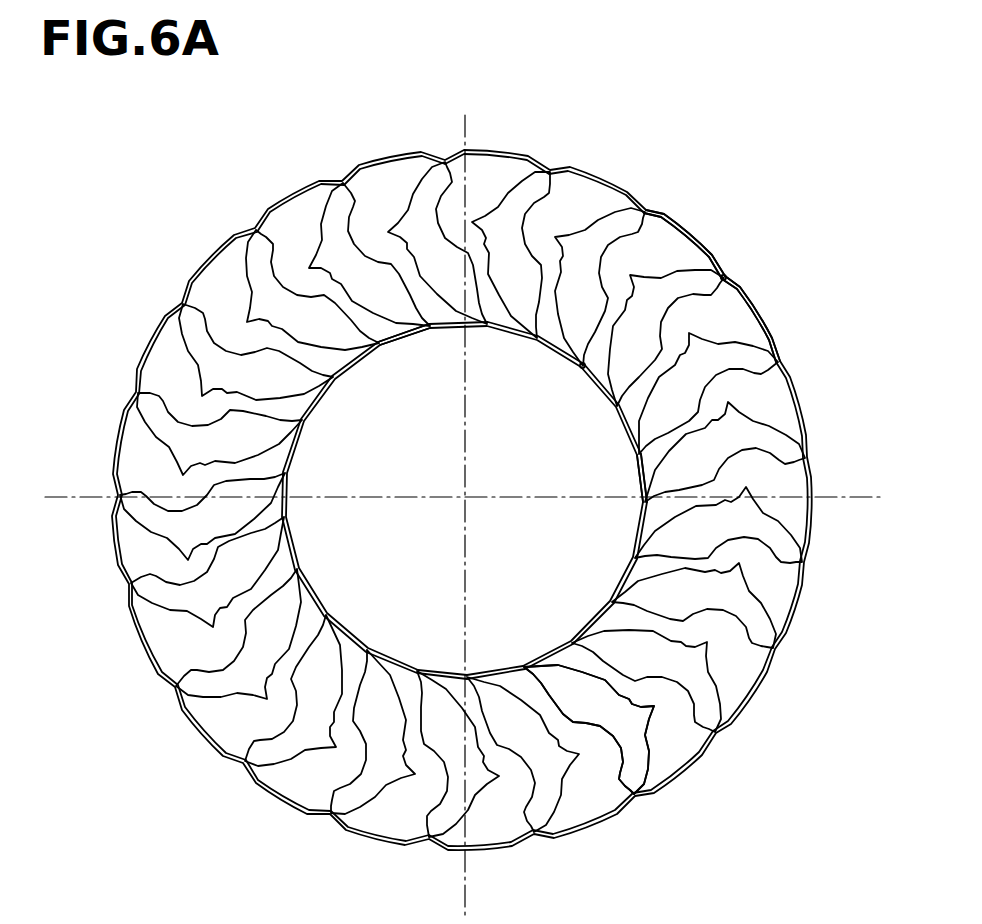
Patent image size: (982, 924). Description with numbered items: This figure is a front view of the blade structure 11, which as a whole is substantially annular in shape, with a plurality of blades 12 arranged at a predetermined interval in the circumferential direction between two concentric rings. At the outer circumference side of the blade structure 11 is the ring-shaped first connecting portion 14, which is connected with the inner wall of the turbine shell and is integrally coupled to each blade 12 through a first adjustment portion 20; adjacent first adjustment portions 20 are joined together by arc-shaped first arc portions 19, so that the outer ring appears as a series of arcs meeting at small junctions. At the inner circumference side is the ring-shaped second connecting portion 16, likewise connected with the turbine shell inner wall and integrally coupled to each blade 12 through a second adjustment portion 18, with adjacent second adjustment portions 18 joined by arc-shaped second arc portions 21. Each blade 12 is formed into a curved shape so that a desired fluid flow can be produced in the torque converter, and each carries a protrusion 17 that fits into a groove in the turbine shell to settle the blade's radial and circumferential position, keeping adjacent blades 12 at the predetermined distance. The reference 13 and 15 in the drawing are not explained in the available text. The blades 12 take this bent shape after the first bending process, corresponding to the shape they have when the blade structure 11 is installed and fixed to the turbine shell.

The blade structure 11 is at (696, 178).
The blade 12 is at (600, 235).
The outer ring 13 is at (781, 640).
The first connecting portion 14 is at (700, 238).
The inner ring 15 is at (447, 326).
The second connecting portion 16 is at (403, 343).
The protrusion 17 is at (640, 712).
The second adjustment portion 18 is at (580, 367).
The first arc portion 19 is at (778, 324).
The first adjustment portion 20 is at (726, 278).
The second arc portion 21 is at (638, 462).